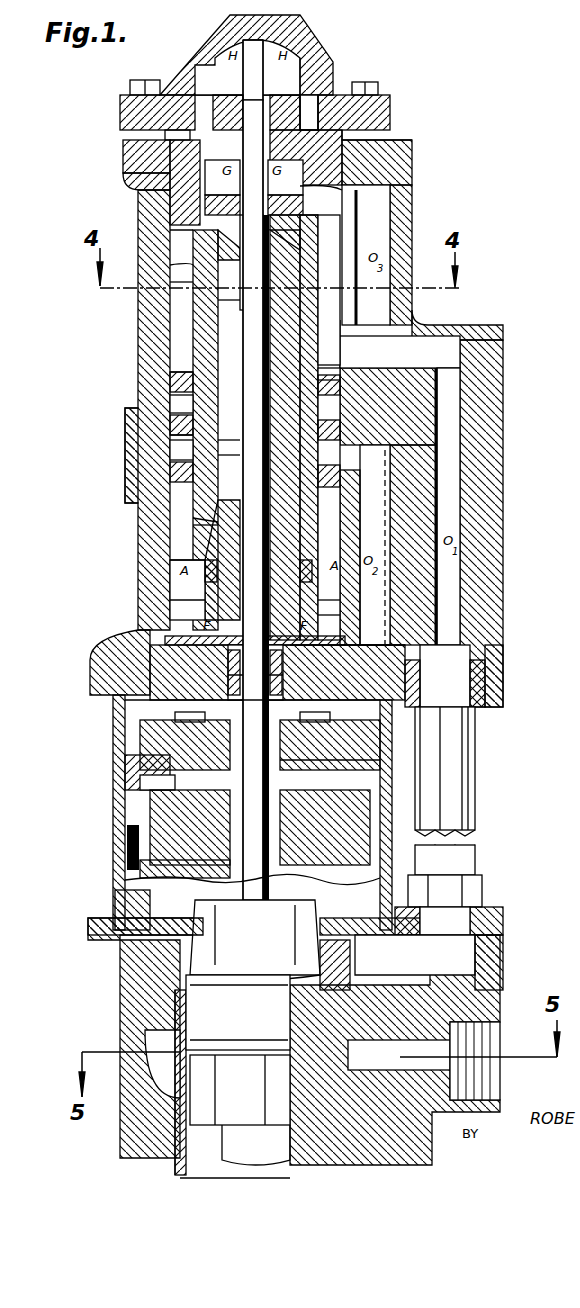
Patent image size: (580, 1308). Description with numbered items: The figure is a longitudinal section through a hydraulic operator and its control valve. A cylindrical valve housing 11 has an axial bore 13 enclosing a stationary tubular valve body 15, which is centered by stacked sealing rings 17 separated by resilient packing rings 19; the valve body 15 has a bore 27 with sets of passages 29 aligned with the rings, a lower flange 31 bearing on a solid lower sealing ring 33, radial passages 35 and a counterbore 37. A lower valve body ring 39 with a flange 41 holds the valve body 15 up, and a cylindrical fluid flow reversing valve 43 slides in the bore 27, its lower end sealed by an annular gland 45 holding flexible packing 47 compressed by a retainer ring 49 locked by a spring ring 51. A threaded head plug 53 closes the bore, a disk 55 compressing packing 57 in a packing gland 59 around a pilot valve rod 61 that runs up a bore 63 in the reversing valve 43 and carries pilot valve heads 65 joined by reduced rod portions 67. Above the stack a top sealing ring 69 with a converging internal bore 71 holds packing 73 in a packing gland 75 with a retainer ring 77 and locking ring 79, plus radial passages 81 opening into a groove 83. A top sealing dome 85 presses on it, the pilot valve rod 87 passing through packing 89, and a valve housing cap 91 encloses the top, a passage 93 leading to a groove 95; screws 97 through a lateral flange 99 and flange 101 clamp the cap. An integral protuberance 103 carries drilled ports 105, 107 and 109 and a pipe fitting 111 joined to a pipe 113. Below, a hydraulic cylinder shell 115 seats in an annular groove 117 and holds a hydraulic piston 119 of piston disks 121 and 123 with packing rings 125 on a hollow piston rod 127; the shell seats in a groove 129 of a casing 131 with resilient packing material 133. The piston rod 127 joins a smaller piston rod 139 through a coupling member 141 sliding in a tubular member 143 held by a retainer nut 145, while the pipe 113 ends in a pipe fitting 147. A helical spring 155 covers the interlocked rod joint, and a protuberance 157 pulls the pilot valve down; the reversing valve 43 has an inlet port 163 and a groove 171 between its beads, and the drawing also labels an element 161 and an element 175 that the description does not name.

The valve housing 11 is at (140, 330).
The bore 13 is at (175, 395).
The valve body 15 is at (225, 455).
The sealing rings 17 is at (182, 345).
The packing rings 19 is at (185, 372).
The bore 27 is at (200, 296).
The fluid flow conducting passages 29 is at (185, 360).
The flange 31 is at (205, 552).
The lower sealing ring 33 is at (200, 507).
The passages 35 is at (195, 525).
The counterbore 37 is at (205, 520).
The lower valve body ring 39 is at (195, 560).
The flange 41 is at (192, 602).
The fluid flow reversing valve 43 is at (230, 440).
The annular gland 45 is at (205, 582).
The flexible packing 47 is at (325, 590).
The retainer ring 49 is at (335, 615).
The spring ring 51 is at (340, 600).
The head plug 53 is at (90, 665).
The disk 55 is at (100, 640).
The packing 57 is at (362, 652).
The packing gland 59 is at (227, 672).
The pilot valve rod 61 is at (228, 670).
The bore 63 is at (350, 315).
The heads 65 is at (235, 240).
The rod portions 67 is at (330, 380).
The top sealing ring 69 is at (250, 255).
The internal bore 71 is at (192, 282).
The packing 73 is at (224, 197).
The packing gland 75 is at (366, 255).
The retainer ring 77 is at (377, 162).
The locking ring 79 is at (285, 197).
The radially extending passages 81 is at (192, 268).
The groove 83 is at (250, 308).
The top sealing dome 85 is at (172, 172).
The pilot valve rod 87 is at (290, 28).
The packing 89 is at (322, 55).
The valve housing cap 91 is at (195, 55).
The passage 93 is at (190, 132).
The groove 95 is at (182, 200).
The screws 97 is at (130, 85).
The lateral flange 99 is at (122, 107).
The flange 101 is at (123, 157).
The protuberance 103 is at (480, 440).
The port 105 is at (345, 187).
The port 107 is at (345, 365).
The port 109 is at (352, 472).
The pipe fitting 111 is at (485, 688).
The pipe 113 is at (475, 760).
The hydraulic cylinder shell 115 is at (130, 826).
The annular groove 117 is at (145, 730).
The hydraulic piston 119 is at (358, 755).
The piston disk 121 is at (135, 760).
The piston disk 123 is at (162, 812).
The packing rings 125 is at (150, 784).
The piston rod 127 is at (145, 852).
The annular groove 129 is at (125, 905).
The casing 131 is at (132, 1015).
The resilient packing material 133 is at (112, 700).
The piston rod 139 is at (240, 1145).
The coupling member 141 is at (265, 985).
The tubular member 143 is at (172, 1132).
The retainer nut 145 is at (172, 960).
The pipe fitting 147 is at (480, 915).
The helical spring 155 is at (347, 668).
The protuberance 157 is at (230, 903).
The block 161 is at (292, 815).
The inlet port 163 is at (332, 400).
The groove 171 is at (125, 412).
The stem 175 is at (256, 470).